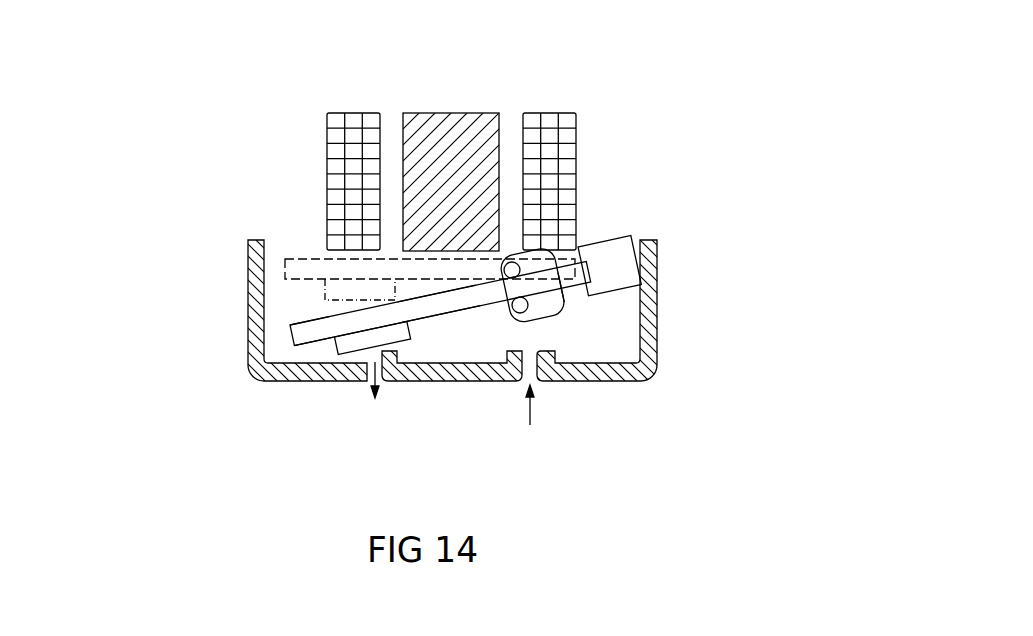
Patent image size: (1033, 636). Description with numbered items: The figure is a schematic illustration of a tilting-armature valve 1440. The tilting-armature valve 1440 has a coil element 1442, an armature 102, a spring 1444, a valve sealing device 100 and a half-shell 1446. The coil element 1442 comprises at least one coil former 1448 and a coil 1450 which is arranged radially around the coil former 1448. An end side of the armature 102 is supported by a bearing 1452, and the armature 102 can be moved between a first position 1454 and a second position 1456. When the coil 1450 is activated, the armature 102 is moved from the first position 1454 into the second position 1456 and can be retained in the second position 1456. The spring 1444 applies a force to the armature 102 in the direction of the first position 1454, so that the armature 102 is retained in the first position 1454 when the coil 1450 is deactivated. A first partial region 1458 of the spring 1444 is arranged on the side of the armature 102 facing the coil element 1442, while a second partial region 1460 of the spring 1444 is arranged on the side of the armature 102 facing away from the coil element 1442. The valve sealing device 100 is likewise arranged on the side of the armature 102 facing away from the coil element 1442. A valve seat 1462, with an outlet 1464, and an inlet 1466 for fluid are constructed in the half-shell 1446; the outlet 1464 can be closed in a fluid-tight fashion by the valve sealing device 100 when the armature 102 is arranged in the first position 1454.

The tilting-armature valve 1440 is at (707, 109).
The coil element 1442 is at (364, 94).
The spring 1444 is at (536, 257).
The half-shell 1446 is at (647, 312).
The coil former 1448 is at (457, 112).
The coil 1450 is at (551, 112).
The bearing 1452 is at (618, 260).
The first position 1454 is at (224, 337).
The second position 1456 is at (224, 268).
The first partial region 1458 is at (512, 278).
The second partial region 1460 is at (545, 290).
The valve seat 1462 is at (345, 350).
The outlet 1464 is at (383, 413).
The inlet 1466 is at (553, 413).
The valve sealing device 100 is at (333, 342).
The armature 102 is at (441, 318).